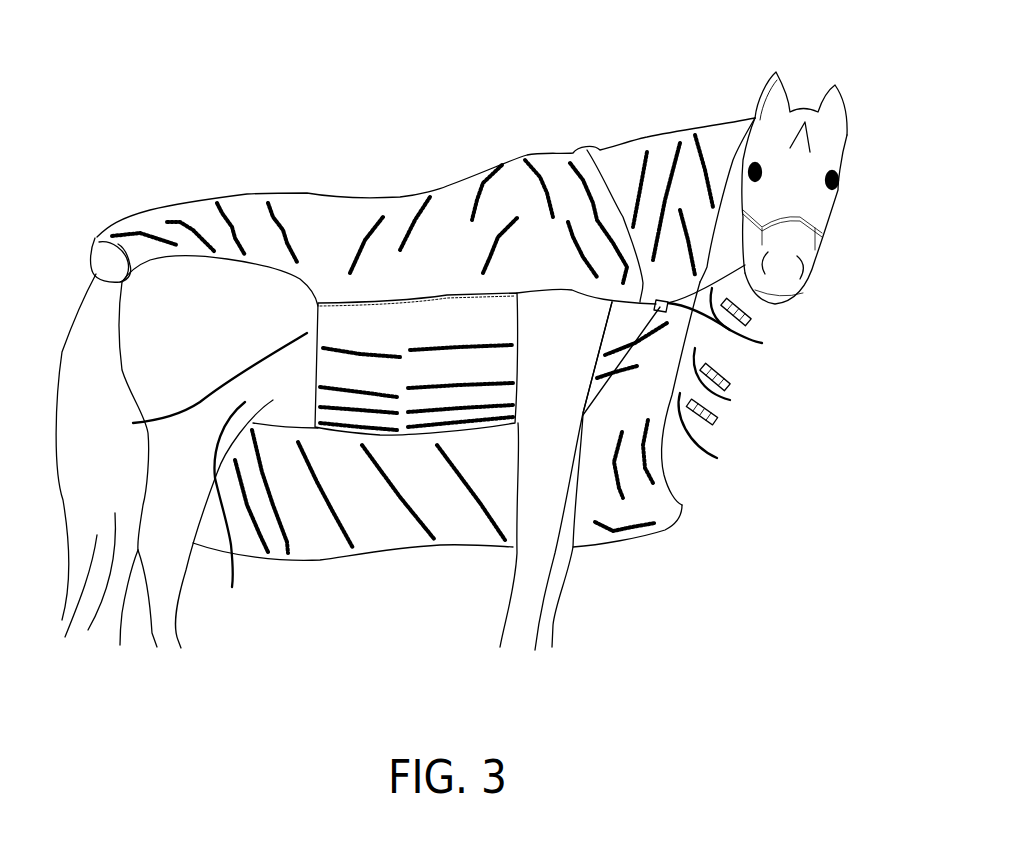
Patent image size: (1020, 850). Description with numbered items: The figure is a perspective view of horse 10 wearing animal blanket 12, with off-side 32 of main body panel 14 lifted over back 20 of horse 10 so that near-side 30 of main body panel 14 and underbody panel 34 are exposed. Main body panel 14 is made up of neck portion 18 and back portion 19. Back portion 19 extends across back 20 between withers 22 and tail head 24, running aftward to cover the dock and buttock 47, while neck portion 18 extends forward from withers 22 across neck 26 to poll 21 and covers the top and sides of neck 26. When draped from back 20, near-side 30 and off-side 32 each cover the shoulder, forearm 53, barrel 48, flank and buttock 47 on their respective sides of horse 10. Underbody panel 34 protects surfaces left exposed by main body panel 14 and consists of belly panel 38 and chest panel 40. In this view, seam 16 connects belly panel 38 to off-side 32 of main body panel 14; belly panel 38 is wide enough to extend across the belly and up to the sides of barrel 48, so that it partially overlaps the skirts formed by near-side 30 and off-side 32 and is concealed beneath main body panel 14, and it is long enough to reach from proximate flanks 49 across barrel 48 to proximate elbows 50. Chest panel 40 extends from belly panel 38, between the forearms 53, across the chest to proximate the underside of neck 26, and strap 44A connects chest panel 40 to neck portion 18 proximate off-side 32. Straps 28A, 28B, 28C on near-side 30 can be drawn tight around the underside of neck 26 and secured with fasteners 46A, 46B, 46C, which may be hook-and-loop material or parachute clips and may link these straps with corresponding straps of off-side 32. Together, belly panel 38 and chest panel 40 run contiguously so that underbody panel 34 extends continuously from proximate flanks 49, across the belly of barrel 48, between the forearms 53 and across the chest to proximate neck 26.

The horse 10 is at (805, 100).
The animal blanket 12 is at (442, 176).
The main body panel 14 is at (395, 215).
The seam 16 is at (410, 301).
The neck portion 18 is at (690, 187).
The back portion 19 is at (345, 207).
The back 20 is at (305, 195).
The poll 21 is at (738, 123).
The withers 22 is at (550, 157).
The tail head 24 is at (127, 218).
The neck 26 is at (650, 138).
The strap 28A is at (757, 332).
The strap 28B is at (730, 400).
The strap 28C is at (717, 458).
The near-side 30 is at (472, 533).
The off-side 32 is at (260, 200).
The underbody panel 34 is at (417, 452).
The belly panel 38 is at (406, 384).
The chest panel 40 is at (630, 374).
The strap 44A is at (737, 330).
The fastener 46A is at (747, 321).
The fastener 46B is at (730, 380).
The fastener 46C is at (715, 422).
The buttock 47 is at (138, 317).
The barrel 48 is at (206, 386).
The flanks 49 is at (229, 507).
The elbows 50 is at (538, 414).
The forearm 53 is at (548, 356).